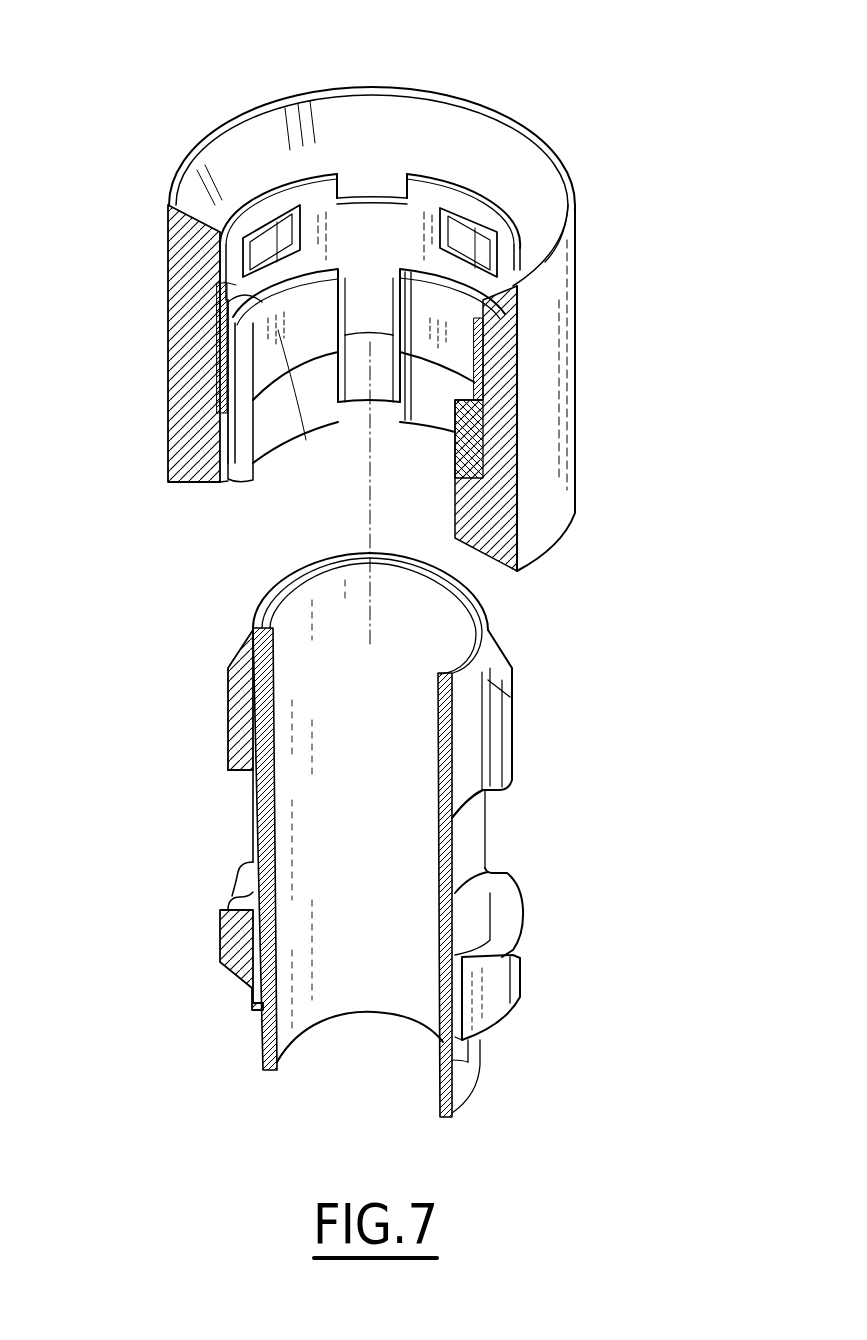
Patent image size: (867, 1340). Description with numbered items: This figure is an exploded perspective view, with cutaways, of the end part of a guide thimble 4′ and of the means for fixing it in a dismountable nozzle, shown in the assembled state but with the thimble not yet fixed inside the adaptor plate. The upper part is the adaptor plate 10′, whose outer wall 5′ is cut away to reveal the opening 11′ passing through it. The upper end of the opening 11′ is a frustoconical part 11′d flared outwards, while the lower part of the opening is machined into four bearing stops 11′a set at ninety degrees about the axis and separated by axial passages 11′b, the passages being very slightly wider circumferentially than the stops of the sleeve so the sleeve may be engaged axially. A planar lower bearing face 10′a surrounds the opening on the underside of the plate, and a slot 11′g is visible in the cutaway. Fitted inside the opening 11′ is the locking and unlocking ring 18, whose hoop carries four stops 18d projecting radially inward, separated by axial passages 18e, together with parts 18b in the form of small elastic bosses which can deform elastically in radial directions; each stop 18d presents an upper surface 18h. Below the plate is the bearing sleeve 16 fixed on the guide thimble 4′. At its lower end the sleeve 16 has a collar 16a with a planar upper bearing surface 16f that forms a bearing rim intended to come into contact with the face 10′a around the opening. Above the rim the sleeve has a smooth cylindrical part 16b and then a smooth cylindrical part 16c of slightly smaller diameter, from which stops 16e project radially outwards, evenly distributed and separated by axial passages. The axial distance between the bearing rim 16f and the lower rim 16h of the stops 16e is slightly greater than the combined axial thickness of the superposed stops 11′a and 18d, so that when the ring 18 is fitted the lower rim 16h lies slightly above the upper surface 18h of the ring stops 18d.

The adaptor plate 10′ is at (548, 437).
The planar lower bearing face 10′a is at (233, 472).
The cap outer wall 5′ is at (568, 190).
The opening 11′ is at (376, 125).
The bearing stops 11′a is at (268, 450).
The axial passages 11′b is at (378, 383).
The frustoconical part 11′d is at (510, 179).
The boss slot 11′g is at (300, 362).
The locking and unlocking ring 18 is at (388, 241).
The elastic bosses 18b is at (263, 232).
The stops 18d is at (263, 344).
The axial passages 18e is at (376, 290).
The upper surface 18h is at (262, 302).
The bearing sleeve 16 is at (467, 758).
The collar 16a is at (520, 965).
The smooth cylindrical part 16b is at (247, 879).
The smooth cylindrical part 16c is at (253, 810).
The stops 16e is at (497, 713).
The planar upper bearing surface 16f is at (235, 893).
The lower rim 16h is at (238, 773).
The end part of a guide thimble 4′ is at (460, 1088).